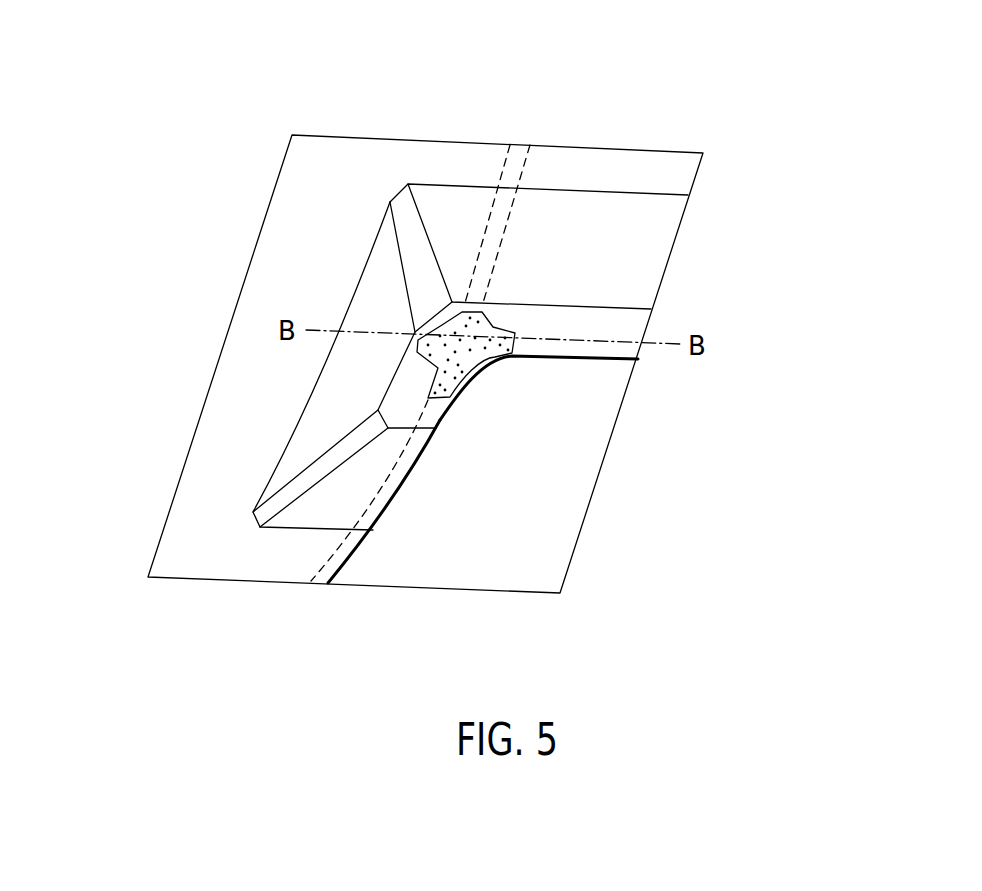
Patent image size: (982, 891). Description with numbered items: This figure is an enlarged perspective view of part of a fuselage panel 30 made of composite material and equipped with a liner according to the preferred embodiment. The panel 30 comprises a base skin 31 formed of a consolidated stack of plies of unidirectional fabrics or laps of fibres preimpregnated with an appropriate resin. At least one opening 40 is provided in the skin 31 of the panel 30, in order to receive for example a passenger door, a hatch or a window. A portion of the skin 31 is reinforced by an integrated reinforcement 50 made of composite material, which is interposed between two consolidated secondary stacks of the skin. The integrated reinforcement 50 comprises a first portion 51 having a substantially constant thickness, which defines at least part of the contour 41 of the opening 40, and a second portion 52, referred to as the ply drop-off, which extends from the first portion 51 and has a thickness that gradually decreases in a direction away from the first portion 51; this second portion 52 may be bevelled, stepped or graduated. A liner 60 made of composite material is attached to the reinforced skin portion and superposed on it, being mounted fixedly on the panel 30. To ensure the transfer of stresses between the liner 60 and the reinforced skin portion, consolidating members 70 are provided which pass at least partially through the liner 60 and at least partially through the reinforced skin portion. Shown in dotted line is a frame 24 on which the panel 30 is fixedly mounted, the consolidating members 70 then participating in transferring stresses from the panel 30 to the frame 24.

The frame 24 is at (522, 182).
The fuselage panel 30 is at (212, 186).
The base skin 31 is at (660, 168).
The opening 40 is at (575, 480).
The contour of the opening 41 is at (343, 565).
The integrated reinforcement 50 is at (625, 269).
The first portion 51 is at (635, 323).
The second portion 52 is at (648, 223).
The liner 60 is at (433, 360).
The consolidating members 70 is at (478, 358).